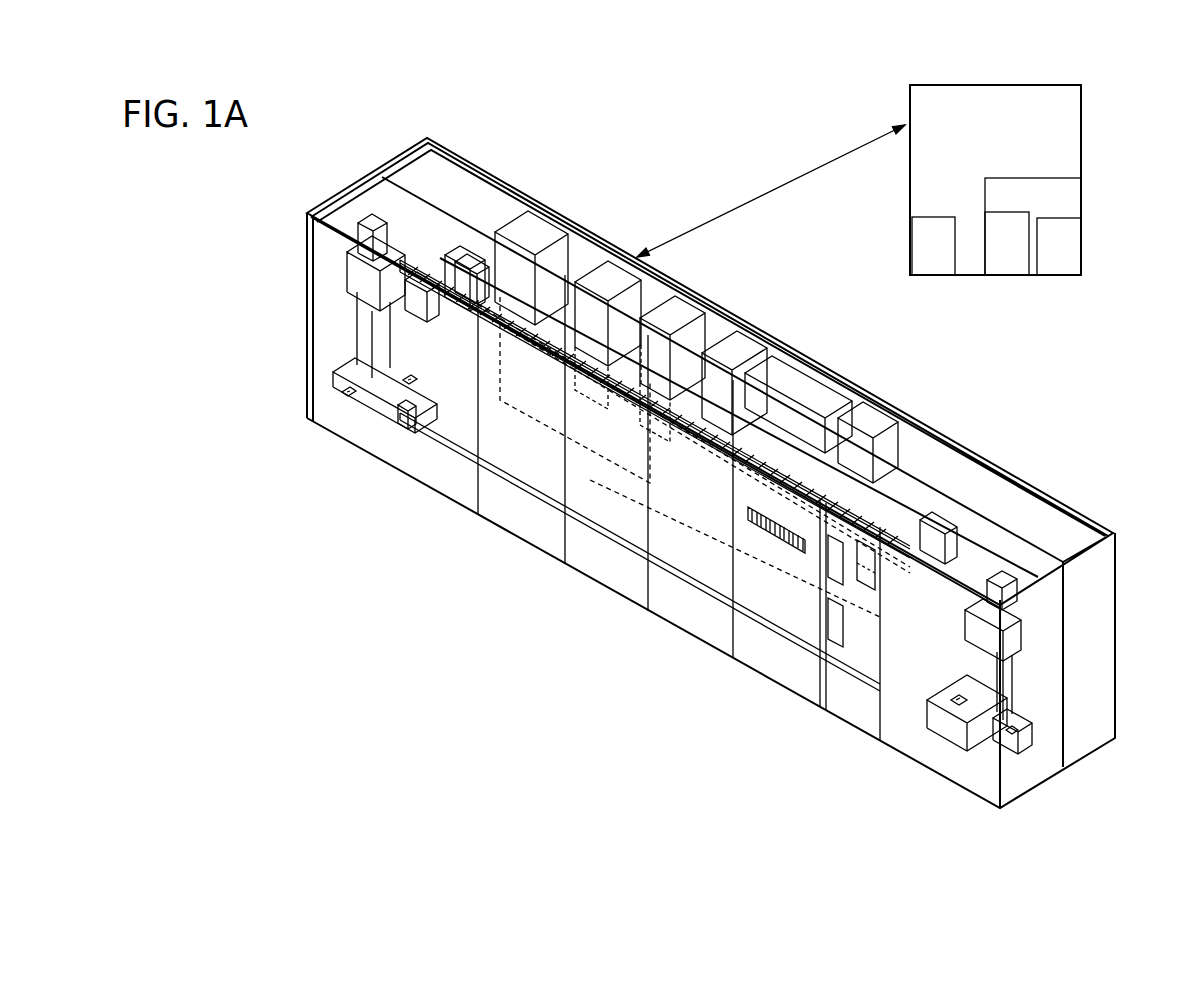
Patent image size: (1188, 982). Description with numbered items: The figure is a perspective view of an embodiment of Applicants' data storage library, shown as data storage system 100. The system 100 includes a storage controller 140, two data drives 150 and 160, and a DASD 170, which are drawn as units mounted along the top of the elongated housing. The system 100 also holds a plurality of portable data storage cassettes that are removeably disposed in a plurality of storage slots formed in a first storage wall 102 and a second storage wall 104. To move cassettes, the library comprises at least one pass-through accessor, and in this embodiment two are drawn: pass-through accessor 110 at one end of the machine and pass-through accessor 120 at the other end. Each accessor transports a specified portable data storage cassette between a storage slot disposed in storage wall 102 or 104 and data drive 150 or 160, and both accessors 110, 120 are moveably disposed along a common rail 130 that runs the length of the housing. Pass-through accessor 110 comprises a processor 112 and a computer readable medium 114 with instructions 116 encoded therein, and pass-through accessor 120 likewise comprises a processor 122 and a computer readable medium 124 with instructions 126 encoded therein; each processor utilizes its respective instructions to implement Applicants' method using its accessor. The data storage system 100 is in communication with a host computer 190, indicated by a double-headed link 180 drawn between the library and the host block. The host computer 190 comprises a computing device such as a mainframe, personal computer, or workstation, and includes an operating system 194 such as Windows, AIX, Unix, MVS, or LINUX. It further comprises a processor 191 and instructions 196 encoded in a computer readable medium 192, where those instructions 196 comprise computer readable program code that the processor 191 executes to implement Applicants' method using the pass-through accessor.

The data storage system 100 is at (668, 672).
The first storage wall 102 is at (553, 290).
The second storage wall 104 is at (507, 437).
The pass-through accessor 110 is at (352, 272).
The processor 112 is at (348, 393).
The computer readable medium 114 is at (410, 413).
The instructions 116 is at (407, 385).
The pass-through accessor 120 is at (1013, 628).
The processor 122 is at (1025, 738).
The computer readable medium 124 is at (948, 708).
The instructions 126 is at (965, 708).
The rail 130 is at (597, 540).
The storage controller 140 is at (605, 267).
The data drive 150 is at (688, 317).
The data drive 160 is at (733, 336).
The DASD 170 is at (533, 237).
The communication link 180 is at (738, 203).
The host computer 190 is at (1008, 161).
The processor 191 is at (949, 255).
The computer readable medium 192 is at (1033, 226).
The operating system 194 is at (1022, 255).
The instructions 196 is at (1076, 255).